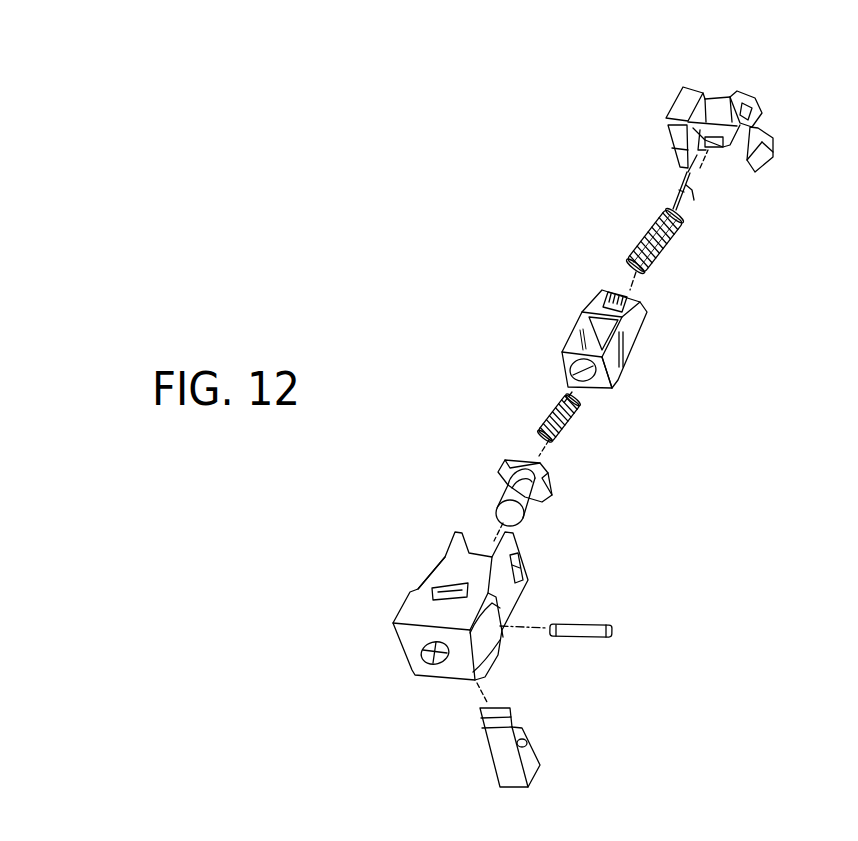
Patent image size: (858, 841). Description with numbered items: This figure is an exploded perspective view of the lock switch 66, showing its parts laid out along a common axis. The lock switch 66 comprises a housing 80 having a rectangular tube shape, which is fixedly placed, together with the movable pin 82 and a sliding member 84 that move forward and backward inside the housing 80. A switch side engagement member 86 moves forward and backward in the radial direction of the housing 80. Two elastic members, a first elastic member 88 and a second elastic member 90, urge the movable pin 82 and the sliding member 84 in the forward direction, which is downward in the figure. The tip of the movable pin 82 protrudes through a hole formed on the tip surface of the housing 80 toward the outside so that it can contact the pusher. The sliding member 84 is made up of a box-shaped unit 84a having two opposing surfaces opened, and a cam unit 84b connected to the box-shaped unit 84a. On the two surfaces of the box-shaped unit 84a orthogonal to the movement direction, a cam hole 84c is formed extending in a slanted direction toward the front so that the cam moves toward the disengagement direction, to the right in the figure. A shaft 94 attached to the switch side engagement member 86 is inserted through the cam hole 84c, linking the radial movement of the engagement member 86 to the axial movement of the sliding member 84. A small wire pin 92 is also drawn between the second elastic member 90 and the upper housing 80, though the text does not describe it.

The lock switch 66 is at (474, 391).
The housing 80 is at (757, 100).
The movable pin 82 is at (500, 490).
The sliding member 84 is at (613, 346).
The box-shaped unit 84a is at (617, 377).
The cam unit 84b is at (642, 315).
The cam hole 84c is at (623, 358).
The switch side engagement member 86 is at (500, 760).
The first elastic member 88 is at (567, 427).
The second elastic member 90 is at (645, 232).
The wire pin 92 is at (682, 183).
The shaft 94 is at (578, 636).